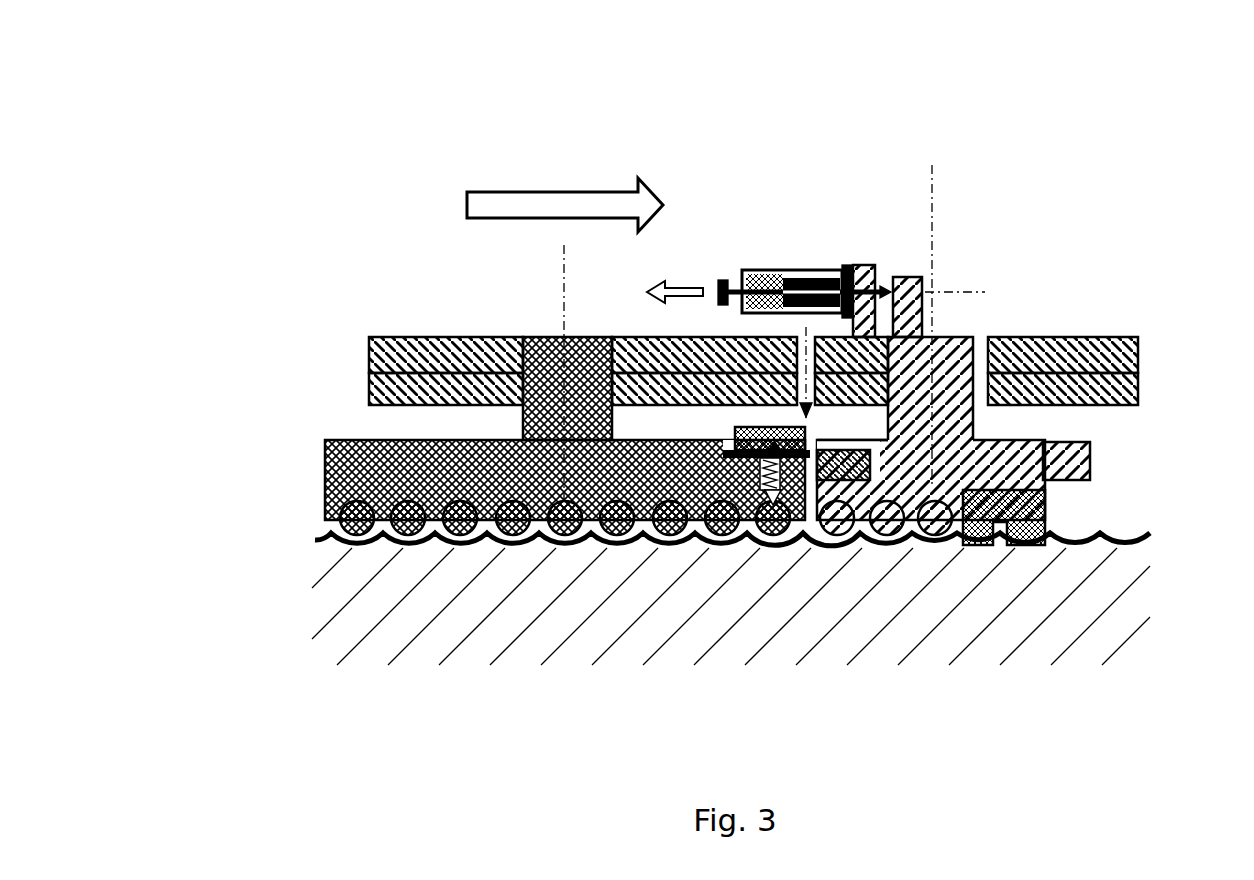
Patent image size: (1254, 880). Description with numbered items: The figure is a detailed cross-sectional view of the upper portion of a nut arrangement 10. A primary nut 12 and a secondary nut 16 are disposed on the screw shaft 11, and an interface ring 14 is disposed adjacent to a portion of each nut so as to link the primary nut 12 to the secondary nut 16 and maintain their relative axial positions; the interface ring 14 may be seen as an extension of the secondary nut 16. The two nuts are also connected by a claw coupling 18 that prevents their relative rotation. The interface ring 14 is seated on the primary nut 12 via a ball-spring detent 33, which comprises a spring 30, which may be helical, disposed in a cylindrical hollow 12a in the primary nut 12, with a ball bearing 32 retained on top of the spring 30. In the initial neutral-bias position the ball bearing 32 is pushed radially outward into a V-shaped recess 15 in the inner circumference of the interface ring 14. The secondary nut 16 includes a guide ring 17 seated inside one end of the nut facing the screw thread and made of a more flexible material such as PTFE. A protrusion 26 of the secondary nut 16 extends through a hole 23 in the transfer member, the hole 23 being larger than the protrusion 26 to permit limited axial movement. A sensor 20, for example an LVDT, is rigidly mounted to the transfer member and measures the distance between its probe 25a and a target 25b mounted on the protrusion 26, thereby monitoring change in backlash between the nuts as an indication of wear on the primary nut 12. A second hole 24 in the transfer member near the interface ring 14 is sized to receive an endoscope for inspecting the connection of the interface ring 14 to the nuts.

The nut arrangement 10 is at (966, 90).
The screw shaft 11 is at (512, 608).
The primary nut 12 is at (510, 615).
The cylindrical hollow 12a is at (797, 542).
The interface ring 14 is at (880, 542).
The V-shaped recess 15 is at (855, 542).
The secondary nut 16 is at (1090, 443).
The guide ring 17 is at (1045, 507).
The claw coupling 18 is at (1033, 338).
The sensor 20 is at (790, 258).
The hole 23 is at (993, 340).
The second hole 24 is at (677, 337).
The probe 25a is at (892, 337).
The target 25b is at (920, 278).
The protrusion 26 is at (960, 337).
The spring 30 is at (758, 533).
The ball bearing 32 is at (717, 547).
The ball-spring detent 33 is at (708, 645).